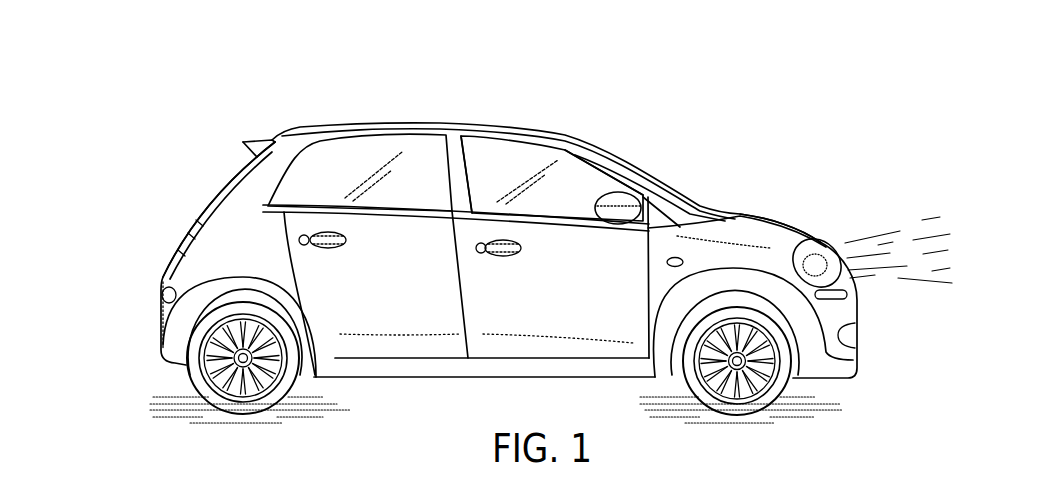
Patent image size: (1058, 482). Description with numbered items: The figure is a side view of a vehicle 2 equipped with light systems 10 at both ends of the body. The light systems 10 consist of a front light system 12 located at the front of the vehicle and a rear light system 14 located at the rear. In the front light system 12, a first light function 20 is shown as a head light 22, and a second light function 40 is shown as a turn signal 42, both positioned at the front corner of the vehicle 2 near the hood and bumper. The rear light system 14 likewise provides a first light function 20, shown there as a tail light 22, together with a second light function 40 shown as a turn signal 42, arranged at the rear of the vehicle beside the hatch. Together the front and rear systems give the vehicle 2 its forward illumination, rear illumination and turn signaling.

The vehicle 2 is at (683, 89).
The light systems 10 is at (167, 220).
The front light system 12 is at (865, 298).
The rear light system 14 is at (150, 279).
The first light function 20 is at (578, 180).
The head light 22 is at (195, 221).
The second light function 40 is at (431, 208).
The turn signal 42 is at (176, 264).